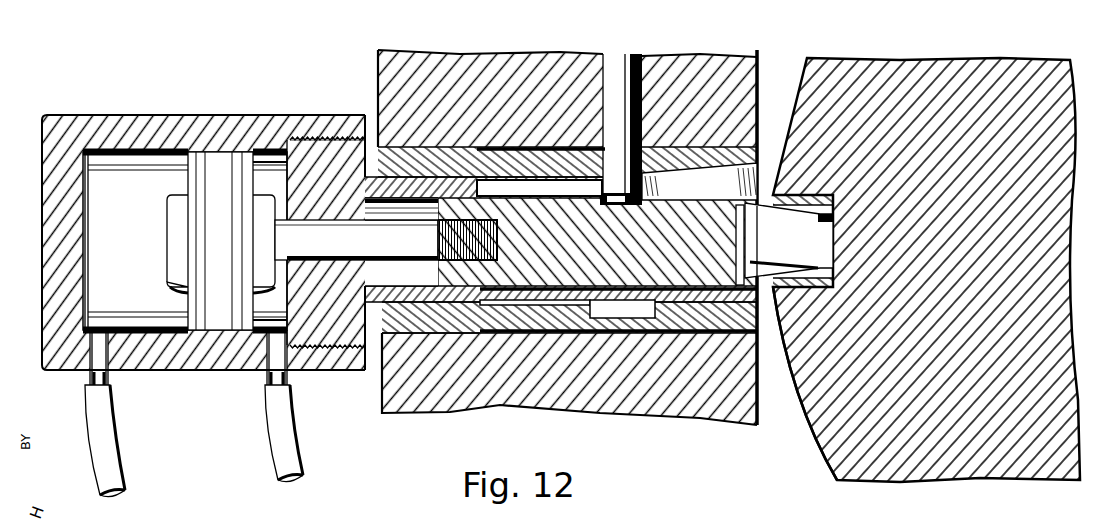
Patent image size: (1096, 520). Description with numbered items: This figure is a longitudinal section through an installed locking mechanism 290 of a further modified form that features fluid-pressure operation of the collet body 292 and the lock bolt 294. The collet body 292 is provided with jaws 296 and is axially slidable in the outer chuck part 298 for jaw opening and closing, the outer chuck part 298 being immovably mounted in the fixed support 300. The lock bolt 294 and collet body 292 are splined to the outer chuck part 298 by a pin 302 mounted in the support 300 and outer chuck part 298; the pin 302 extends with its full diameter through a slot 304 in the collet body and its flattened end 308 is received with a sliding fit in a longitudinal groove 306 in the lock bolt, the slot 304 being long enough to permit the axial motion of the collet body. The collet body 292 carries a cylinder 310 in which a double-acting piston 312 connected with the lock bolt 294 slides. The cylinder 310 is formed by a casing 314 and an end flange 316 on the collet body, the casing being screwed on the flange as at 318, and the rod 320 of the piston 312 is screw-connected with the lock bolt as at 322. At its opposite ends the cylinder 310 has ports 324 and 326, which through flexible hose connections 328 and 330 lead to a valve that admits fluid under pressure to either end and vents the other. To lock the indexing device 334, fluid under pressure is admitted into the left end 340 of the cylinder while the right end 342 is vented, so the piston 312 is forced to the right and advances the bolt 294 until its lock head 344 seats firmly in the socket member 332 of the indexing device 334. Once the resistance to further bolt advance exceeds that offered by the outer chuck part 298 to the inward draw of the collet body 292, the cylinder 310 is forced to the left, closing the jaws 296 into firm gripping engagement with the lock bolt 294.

The locking mechanism 290 is at (765, 122).
The collet body 292 is at (618, 310).
The lock bolt 294 is at (735, 168).
The jaws 296 is at (763, 322).
The outer chuck part 298 is at (525, 320).
The fixed support 300 is at (685, 68).
The pin 302 is at (611, 85).
The slot 304 is at (541, 172).
The longitudinal groove 306 is at (653, 225).
The flattened end 308 is at (620, 191).
The cylinder 310 is at (171, 113).
The double-acting piston 312 is at (210, 288).
The casing 314 is at (60, 253).
The end flange 316 is at (318, 157).
The screw connection 318 is at (302, 136).
The rod 320 is at (356, 240).
The screw connection 322 is at (440, 238).
The port 324 is at (99, 345).
The port 326 is at (276, 345).
The flexible hose connection 328 is at (110, 445).
The flexible hose connection 330 is at (290, 444).
The socket member 332 is at (805, 385).
The indexing device 334 is at (823, 58).
The left end of cylinder 340 is at (187, 241).
The right end of cylinder 342 is at (270, 188).
The lock head 344 is at (789, 241).